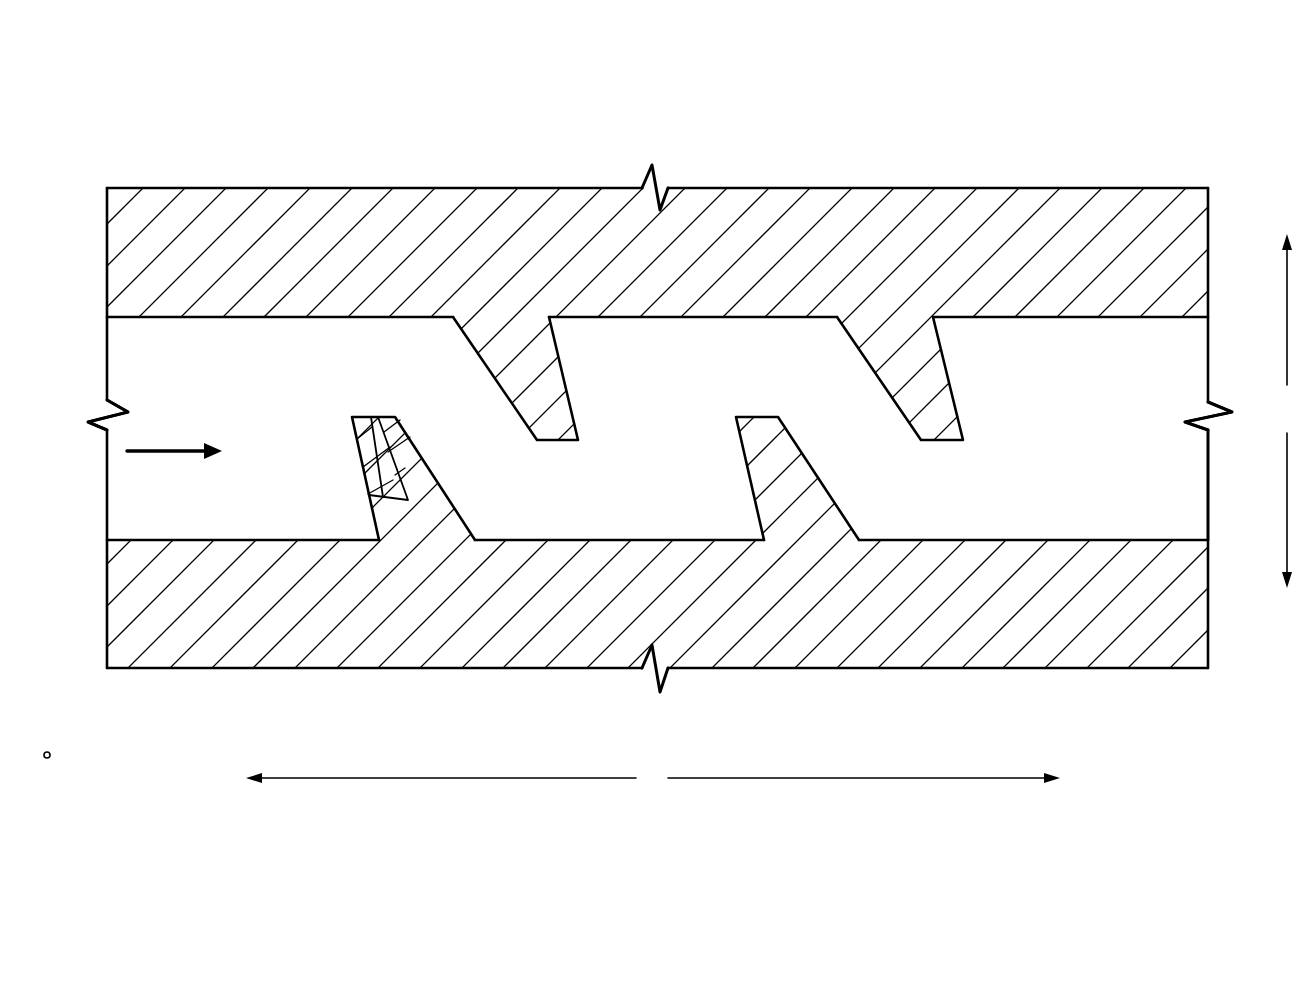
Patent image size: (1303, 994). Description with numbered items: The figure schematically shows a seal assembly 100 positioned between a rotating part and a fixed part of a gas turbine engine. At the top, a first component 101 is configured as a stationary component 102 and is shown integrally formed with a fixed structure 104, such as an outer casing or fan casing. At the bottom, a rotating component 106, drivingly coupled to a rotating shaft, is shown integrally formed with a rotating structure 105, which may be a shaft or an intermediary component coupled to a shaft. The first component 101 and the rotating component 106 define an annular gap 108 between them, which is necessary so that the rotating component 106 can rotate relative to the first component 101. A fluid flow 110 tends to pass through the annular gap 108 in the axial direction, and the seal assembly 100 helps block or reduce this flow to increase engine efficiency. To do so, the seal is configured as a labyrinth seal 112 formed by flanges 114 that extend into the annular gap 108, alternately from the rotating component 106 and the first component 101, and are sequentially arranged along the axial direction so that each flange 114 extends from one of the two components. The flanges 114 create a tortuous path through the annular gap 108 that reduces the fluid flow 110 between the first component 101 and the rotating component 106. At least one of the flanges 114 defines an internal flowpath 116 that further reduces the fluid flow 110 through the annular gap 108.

The seal assembly 100 is at (160, 117).
The first component 101 is at (350, 189).
The stationary component 102 is at (310, 318).
The fixed structure 104 is at (970, 179).
The rotating structure 105 is at (455, 654).
The rotating component 106 is at (246, 540).
The annular gap 108 is at (1176, 439).
The fluid flow 110 is at (164, 447).
The labyrinth seal 112 is at (468, 159).
The flange 114 is at (567, 397).
The internal flowpath 116 is at (406, 482).